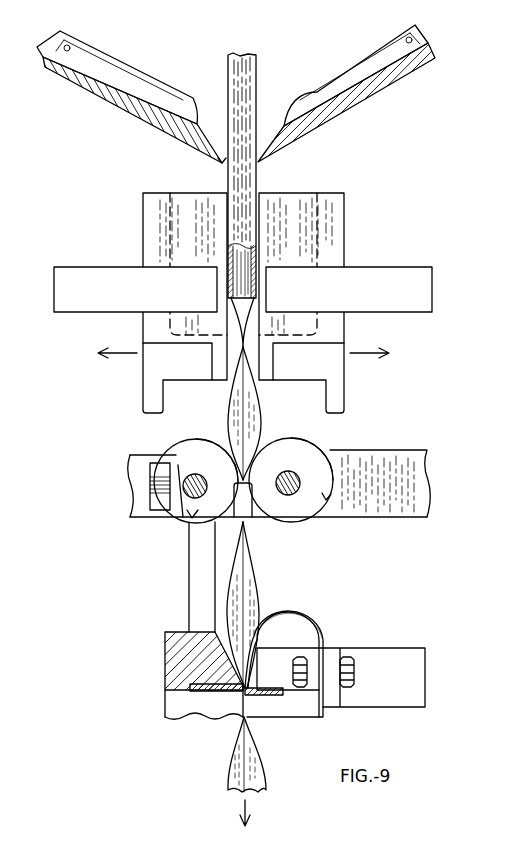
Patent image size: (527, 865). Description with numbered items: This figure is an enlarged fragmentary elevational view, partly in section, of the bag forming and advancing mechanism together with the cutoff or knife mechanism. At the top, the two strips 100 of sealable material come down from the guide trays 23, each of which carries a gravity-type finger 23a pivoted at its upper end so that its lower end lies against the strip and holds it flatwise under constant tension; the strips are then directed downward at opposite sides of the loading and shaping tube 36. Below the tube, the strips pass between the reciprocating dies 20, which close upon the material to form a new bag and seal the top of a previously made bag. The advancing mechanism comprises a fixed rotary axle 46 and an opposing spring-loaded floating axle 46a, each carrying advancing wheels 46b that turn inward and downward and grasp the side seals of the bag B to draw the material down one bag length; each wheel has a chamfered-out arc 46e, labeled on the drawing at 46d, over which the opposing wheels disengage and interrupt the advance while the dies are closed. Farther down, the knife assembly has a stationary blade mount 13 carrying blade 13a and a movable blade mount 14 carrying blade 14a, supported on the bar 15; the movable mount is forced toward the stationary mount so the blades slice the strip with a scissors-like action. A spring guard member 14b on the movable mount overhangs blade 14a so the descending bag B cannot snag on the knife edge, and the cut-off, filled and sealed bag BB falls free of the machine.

The stationary knife blade mount 13 is at (180, 667).
The knife blade 13a is at (220, 691).
The movable knife blade mount 14 is at (310, 708).
The knife blade 14a is at (262, 691).
The spring guard member 14b is at (300, 616).
The mounting bar 15 is at (420, 688).
The dies 20 is at (322, 228).
The guide tray 23 is at (118, 98).
The gravity-type finger 23a is at (158, 86).
The loading and shaping tube 36 is at (257, 183).
The axle 46 is at (299, 478).
The floating axle 46a is at (193, 488).
The advancing wheels 46b is at (191, 519).
The roller surface 46d is at (200, 442).
The chamfered arc or segment 46e is at (206, 520).
The strips of sealable material 100 is at (222, 164).
The bag B is at (256, 594).
The bag BB is at (258, 769).